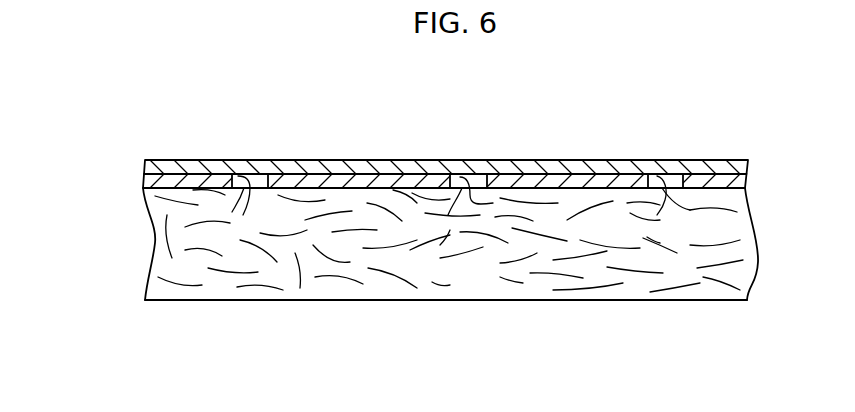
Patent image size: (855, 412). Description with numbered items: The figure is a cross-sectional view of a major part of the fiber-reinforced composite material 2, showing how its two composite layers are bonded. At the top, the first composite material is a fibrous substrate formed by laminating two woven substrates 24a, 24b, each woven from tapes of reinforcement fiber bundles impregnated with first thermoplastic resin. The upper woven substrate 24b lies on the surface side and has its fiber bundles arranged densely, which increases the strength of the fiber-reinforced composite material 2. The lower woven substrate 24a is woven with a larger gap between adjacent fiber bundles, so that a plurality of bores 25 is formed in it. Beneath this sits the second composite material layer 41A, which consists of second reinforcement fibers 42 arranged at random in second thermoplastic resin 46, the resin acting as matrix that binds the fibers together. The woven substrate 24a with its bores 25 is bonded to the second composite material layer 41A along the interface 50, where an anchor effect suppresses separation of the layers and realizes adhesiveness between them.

The fiber-reinforced composite material 2 is at (555, 130).
The woven substrate 24a is at (150, 180).
The woven substrate 24b is at (152, 166).
The bore 25 is at (262, 173).
The second composite material layer 41A is at (388, 288).
The second reinforcement fibers 42 is at (241, 188).
The second thermoplastic resin 46 is at (638, 283).
The interface 50 is at (373, 167).